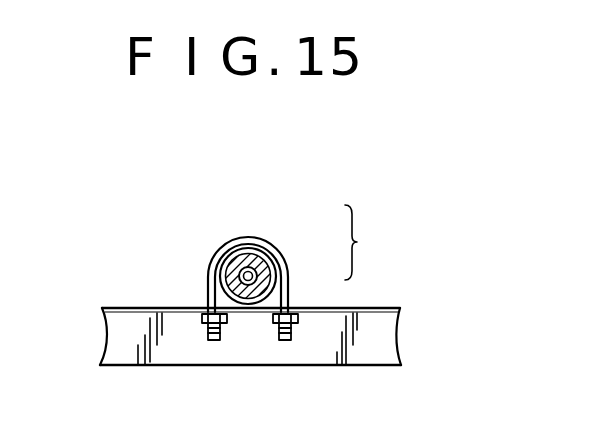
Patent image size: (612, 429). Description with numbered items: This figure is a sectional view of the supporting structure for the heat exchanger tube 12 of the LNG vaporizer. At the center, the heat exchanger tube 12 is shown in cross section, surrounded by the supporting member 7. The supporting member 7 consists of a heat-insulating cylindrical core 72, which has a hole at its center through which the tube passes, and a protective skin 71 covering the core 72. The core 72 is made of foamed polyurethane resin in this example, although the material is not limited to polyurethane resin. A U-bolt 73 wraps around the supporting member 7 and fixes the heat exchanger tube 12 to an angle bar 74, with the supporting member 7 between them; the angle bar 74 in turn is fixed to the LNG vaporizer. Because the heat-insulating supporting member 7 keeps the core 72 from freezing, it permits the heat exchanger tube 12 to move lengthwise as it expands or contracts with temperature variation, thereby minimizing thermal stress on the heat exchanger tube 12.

The heat exchanger tube 12 is at (237, 246).
The supporting member 7 is at (362, 242).
The protective skin 71 is at (260, 248).
The heat-insulating cylindrical core 72 is at (277, 268).
The U-bolt 73 is at (218, 252).
The angle bar 74 is at (372, 327).